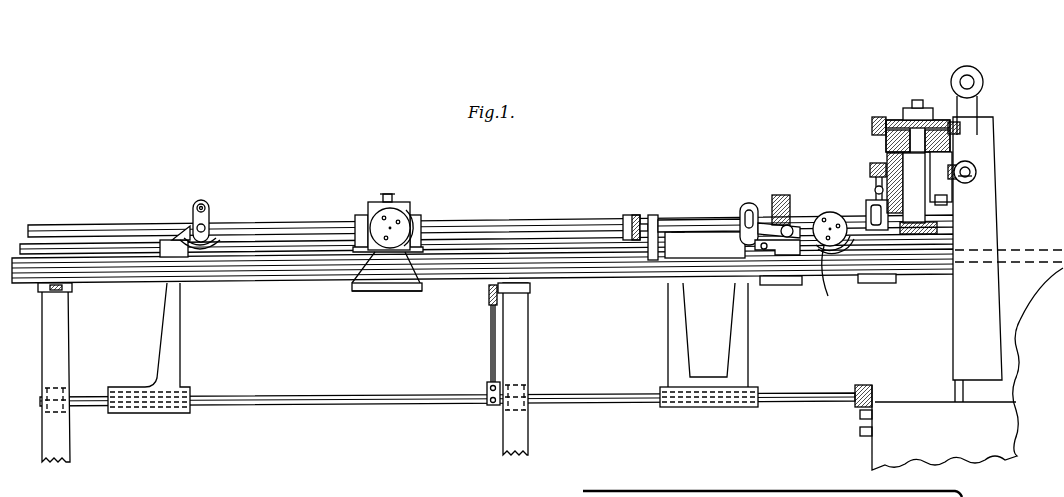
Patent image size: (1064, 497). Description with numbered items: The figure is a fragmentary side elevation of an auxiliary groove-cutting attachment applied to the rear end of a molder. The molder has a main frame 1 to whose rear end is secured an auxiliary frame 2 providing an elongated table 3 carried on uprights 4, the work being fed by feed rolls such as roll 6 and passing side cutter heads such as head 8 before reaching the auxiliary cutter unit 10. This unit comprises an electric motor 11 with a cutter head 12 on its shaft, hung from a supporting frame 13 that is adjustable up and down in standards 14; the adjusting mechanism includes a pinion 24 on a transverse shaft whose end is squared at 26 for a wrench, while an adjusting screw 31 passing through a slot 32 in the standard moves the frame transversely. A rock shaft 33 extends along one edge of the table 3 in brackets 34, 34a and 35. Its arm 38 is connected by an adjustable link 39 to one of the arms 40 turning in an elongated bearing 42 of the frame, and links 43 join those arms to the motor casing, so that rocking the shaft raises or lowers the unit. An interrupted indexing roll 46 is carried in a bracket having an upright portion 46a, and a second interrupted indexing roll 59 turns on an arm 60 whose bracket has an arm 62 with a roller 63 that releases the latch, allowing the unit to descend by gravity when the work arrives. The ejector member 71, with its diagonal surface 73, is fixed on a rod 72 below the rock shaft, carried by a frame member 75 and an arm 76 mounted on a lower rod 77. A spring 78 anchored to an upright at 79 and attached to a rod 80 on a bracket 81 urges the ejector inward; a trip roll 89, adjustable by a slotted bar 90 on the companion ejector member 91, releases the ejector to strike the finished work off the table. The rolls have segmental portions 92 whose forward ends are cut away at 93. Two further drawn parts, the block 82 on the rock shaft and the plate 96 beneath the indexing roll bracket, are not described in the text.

The main frame 1 is at (1002, 428).
The auxiliary frame 2 is at (72, 284).
The elongated table 3 is at (608, 283).
The uprights 4 is at (60, 440).
The feed roll 6 is at (650, 218).
The side cutter head 8 is at (740, 203).
The auxiliary cutter unit 10 is at (909, 108).
The electric motor 11 is at (900, 117).
The cutter head 12 is at (916, 262).
The supporting frame 13 is at (933, 200).
The standards 14 is at (975, 142).
The pinion 24 is at (957, 70).
The squared end 26 is at (968, 72).
The adjusting screw 31 is at (985, 169).
The slot 32 is at (975, 183).
The rock shaft 33 is at (496, 224).
The bracket 34 is at (898, 276).
The bracket 34a is at (786, 285).
The bracket 35 is at (401, 292).
The arm 38 is at (870, 216).
The adjustable link 39 is at (870, 168).
The arms 40 is at (872, 140).
The elongated bearing 42 is at (940, 118).
The links 43 is at (878, 118).
The interrupted indexing roll 46 is at (342, 303).
The upright portion 46a is at (400, 203).
The second interrupted indexing roll 59 is at (862, 283).
The arm 60 is at (800, 223).
The arm 62 is at (788, 200).
The roller 63 is at (781, 195).
The ejector member 71 is at (717, 232).
The rod 72 is at (541, 244).
The diagonal surface 73 is at (696, 237).
The frame member 75 is at (672, 325).
The arm 76 is at (176, 330).
The rod 77 is at (795, 397).
The spring 78 is at (472, 343).
The anchor point 79 is at (488, 294).
The rod 80 is at (491, 348).
The bracket 81 is at (487, 386).
The stop block 82 is at (648, 214).
The interrupted roll 89 is at (238, 240).
The slotted bar 90 is at (204, 202).
The ejector member 91 is at (188, 232).
The segmental portions 92 is at (832, 280).
The cut-away portion 93 is at (408, 217).
The base plate 96 is at (422, 288).